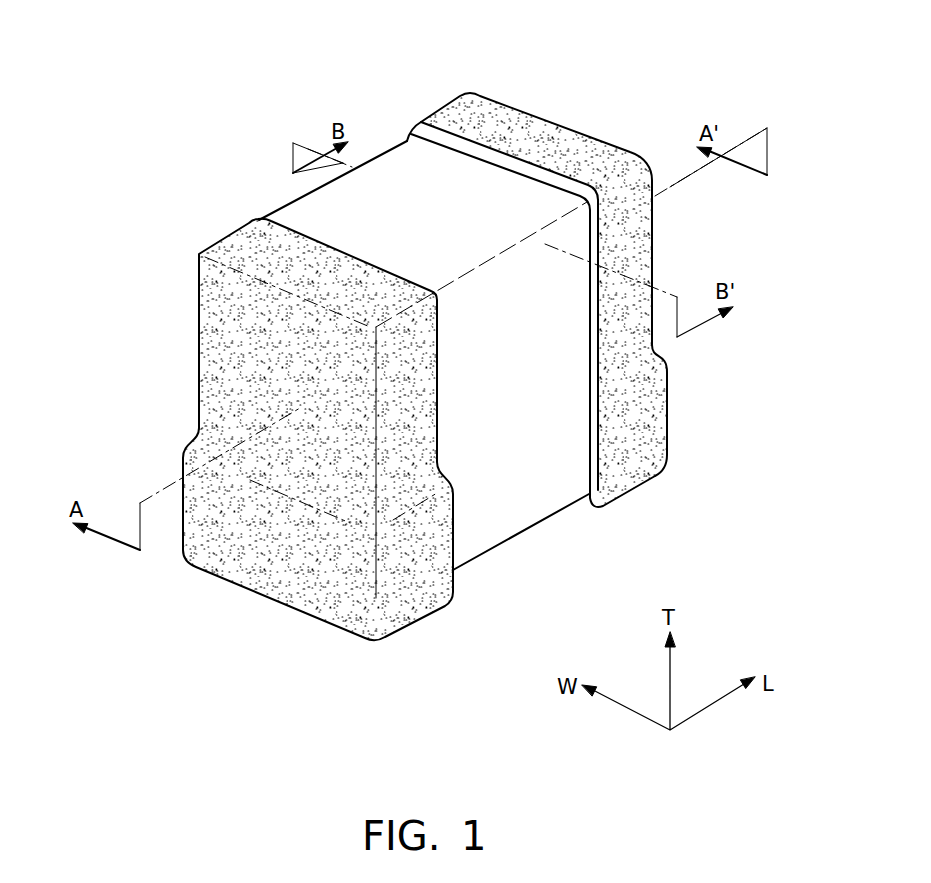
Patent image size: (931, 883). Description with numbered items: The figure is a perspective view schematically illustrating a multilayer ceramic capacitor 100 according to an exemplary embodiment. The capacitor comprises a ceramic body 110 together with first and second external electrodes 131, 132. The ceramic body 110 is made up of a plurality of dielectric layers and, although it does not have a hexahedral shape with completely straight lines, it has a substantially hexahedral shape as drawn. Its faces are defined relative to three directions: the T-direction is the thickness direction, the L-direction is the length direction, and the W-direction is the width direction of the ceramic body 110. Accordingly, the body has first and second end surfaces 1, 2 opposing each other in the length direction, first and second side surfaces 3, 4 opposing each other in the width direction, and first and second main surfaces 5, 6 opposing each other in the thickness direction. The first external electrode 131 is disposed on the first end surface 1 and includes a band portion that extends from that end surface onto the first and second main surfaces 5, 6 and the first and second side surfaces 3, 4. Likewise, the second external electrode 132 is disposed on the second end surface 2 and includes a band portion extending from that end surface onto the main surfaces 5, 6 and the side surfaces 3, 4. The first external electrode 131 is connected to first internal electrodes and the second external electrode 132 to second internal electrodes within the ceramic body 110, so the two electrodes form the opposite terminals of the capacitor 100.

The multilayer ceramic capacitor 100 is at (231, 52).
The ceramic body 110 is at (400, 158).
The first external electrode 131 is at (238, 250).
The second external electrode 132 is at (467, 108).
The first end surface 1 is at (255, 357).
The second end surface 2 is at (568, 156).
The first side surface 3 is at (311, 218).
The second side surface 4 is at (572, 436).
The first main surface 5 is at (433, 156).
The second main surface 6 is at (503, 526).